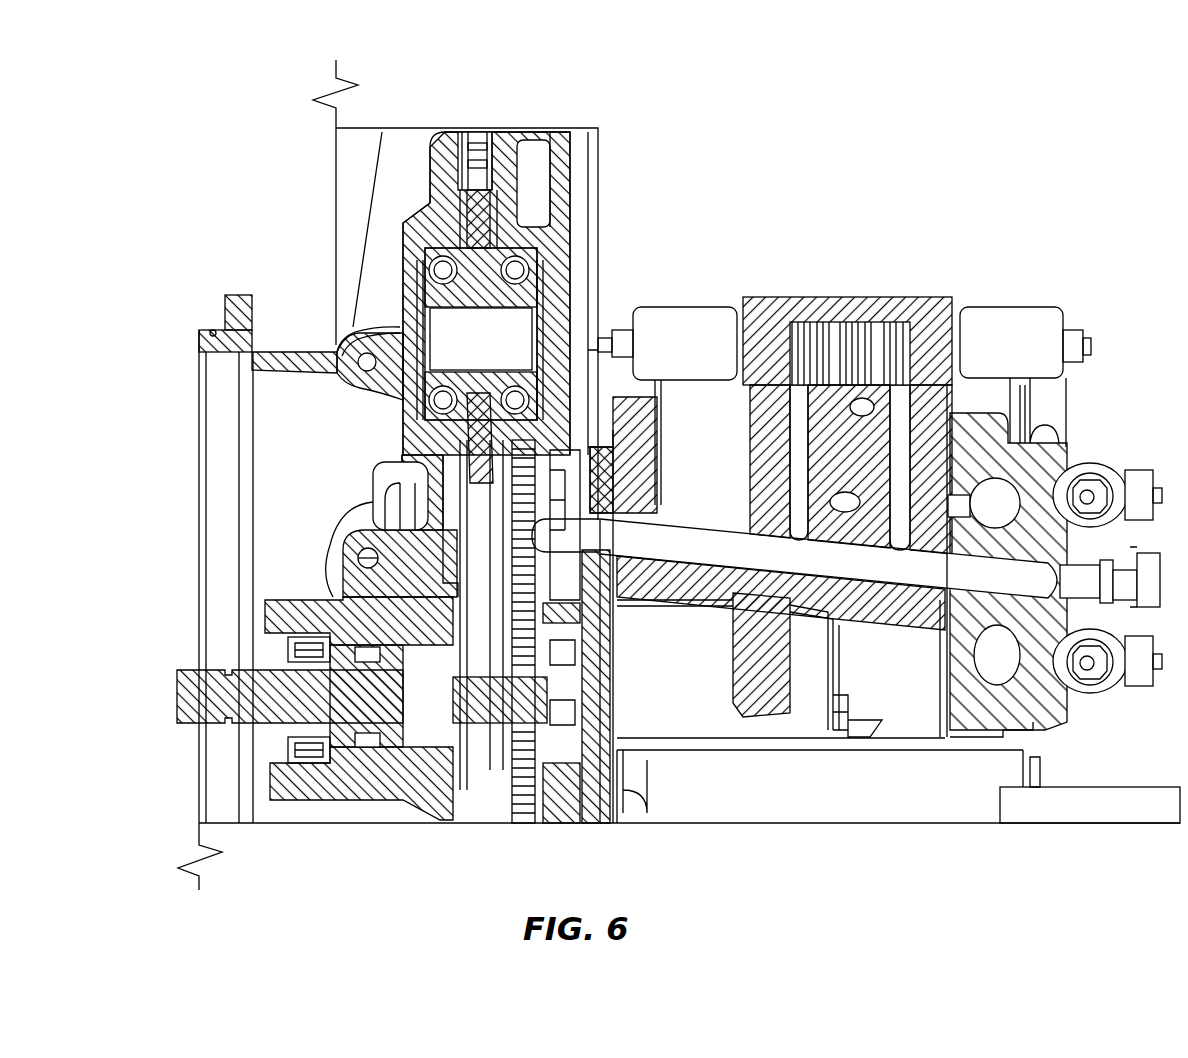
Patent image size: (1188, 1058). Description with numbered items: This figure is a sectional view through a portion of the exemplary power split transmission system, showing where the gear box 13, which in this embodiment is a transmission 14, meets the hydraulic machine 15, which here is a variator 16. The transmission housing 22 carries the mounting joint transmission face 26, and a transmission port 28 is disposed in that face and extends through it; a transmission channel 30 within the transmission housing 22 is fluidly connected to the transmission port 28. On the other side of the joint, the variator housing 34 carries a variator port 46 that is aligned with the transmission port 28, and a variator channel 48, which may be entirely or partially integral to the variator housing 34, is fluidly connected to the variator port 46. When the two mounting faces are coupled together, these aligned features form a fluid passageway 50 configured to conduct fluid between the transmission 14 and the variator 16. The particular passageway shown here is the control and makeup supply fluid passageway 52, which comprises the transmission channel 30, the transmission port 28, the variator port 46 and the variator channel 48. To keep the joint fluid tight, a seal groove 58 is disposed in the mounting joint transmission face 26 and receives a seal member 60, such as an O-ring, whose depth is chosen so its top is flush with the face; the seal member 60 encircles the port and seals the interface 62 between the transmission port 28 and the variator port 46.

The gear box 13 is at (568, 204).
The transmission 14 is at (533, 179).
The hydraulic machine 15 is at (758, 705).
The variator 16 is at (761, 655).
The transmission housing 22 is at (573, 299).
The mounting joint transmission face 26 is at (660, 500).
The transmission port 28 is at (470, 420).
The transmission channel 30 is at (590, 530).
The variator housing 34 is at (684, 592).
The variator port 46 is at (680, 495).
The variator channel 48 is at (880, 572).
The fluid passageway 50 is at (754, 545).
The control and makeup supply fluid passageway 52 is at (808, 572).
The seal groove 58 is at (592, 585).
The seal member 60 is at (670, 500).
The interface 62 is at (637, 568).